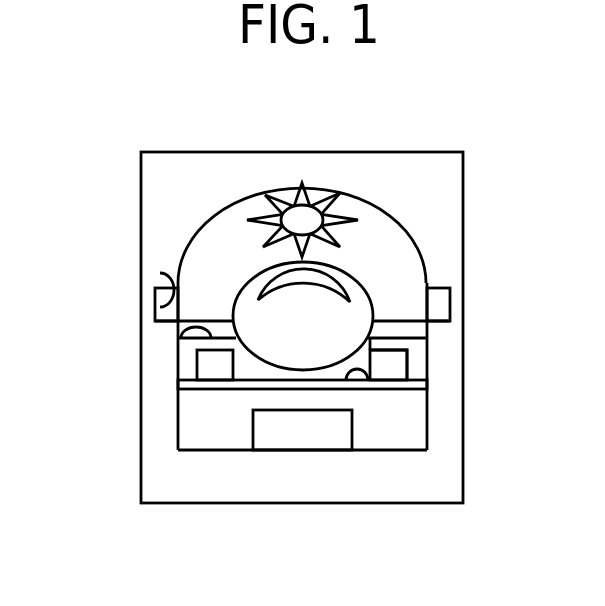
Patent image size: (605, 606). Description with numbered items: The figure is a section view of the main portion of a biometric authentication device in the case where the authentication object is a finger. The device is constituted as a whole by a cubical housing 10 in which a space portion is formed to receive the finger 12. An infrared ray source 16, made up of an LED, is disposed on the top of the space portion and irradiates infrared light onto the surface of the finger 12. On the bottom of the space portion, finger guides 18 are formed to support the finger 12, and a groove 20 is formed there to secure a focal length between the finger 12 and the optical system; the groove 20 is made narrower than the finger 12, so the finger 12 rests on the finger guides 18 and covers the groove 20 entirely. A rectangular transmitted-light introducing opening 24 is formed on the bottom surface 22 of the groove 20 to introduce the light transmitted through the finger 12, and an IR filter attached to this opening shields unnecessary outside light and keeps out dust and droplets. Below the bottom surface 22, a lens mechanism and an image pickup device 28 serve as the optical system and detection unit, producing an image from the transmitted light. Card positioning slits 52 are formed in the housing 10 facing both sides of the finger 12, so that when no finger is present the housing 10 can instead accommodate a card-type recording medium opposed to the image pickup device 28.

The housing 10 is at (140, 211).
The finger 12 is at (253, 305).
The infrared ray source 16 is at (302, 222).
The finger guides 18 is at (177, 332).
The groove 20 is at (400, 361).
The bottom surface 22 is at (367, 380).
The transmitted-light introducing opening 24 is at (283, 383).
The image pickup device 28 is at (303, 432).
The card positioning slits 52 is at (160, 273).